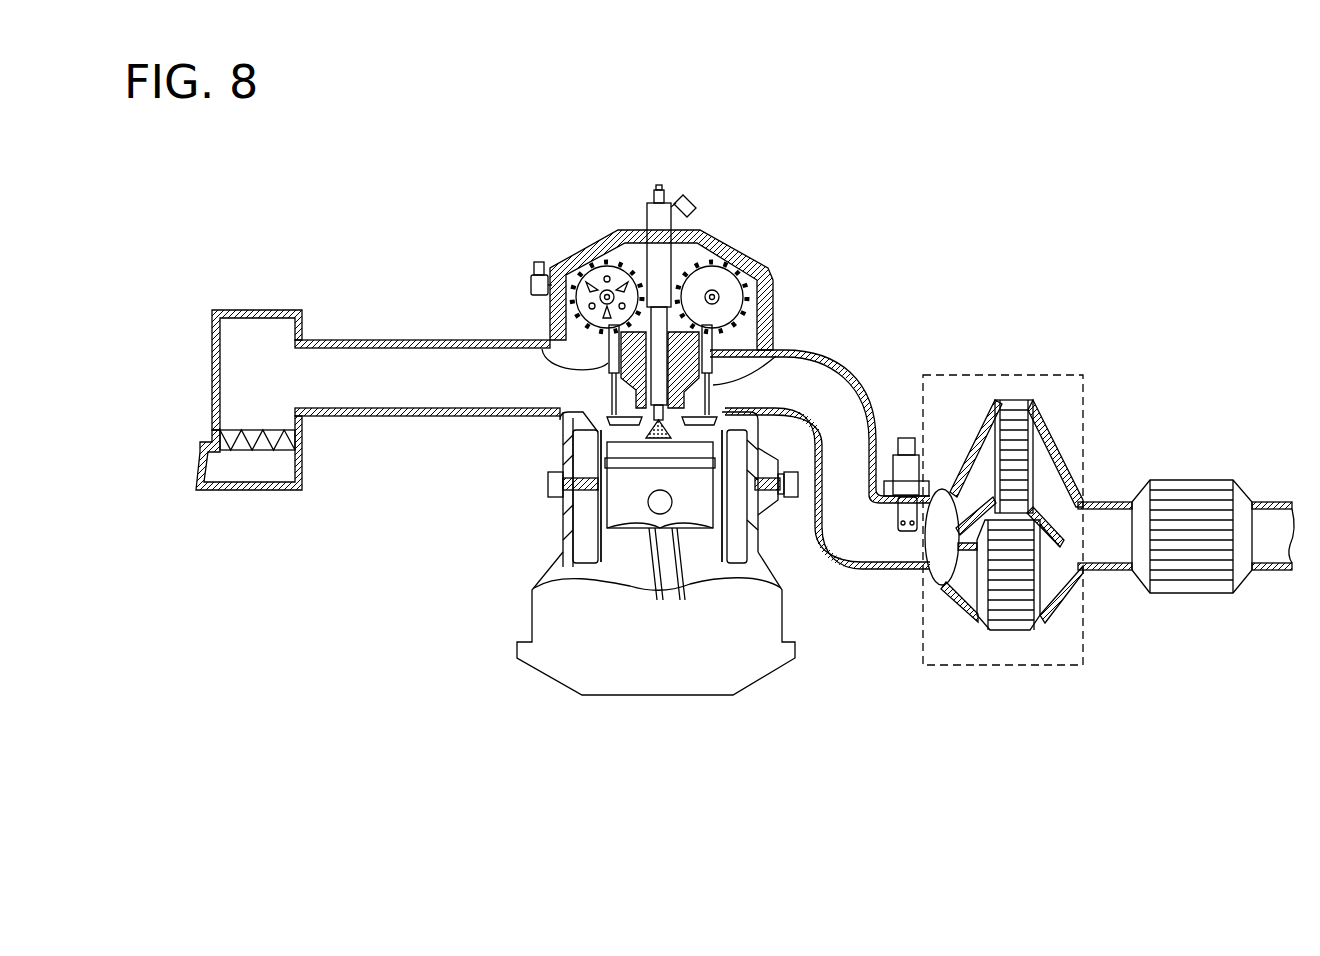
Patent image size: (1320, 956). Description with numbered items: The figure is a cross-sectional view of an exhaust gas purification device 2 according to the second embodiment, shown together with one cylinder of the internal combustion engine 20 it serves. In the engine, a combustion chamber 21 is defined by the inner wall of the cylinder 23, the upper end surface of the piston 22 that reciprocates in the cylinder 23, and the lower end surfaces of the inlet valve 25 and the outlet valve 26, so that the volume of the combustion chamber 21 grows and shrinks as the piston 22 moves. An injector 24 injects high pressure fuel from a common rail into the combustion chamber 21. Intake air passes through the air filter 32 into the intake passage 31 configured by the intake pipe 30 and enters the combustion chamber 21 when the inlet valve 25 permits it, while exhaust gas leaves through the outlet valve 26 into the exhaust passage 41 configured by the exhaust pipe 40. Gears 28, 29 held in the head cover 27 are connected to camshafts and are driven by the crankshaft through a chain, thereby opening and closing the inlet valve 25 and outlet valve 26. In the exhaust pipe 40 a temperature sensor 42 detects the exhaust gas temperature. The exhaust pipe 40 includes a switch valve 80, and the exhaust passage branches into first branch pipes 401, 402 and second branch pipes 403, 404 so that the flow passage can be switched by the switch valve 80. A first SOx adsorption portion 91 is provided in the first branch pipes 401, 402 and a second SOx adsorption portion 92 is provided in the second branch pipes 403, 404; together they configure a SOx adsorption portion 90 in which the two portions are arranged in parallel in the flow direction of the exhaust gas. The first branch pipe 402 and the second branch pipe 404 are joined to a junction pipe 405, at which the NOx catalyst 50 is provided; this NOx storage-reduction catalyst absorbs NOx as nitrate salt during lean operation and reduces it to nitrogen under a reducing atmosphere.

The exhaust gas purification device 2 is at (1190, 395).
The internal combustion engine 20 is at (757, 681).
The combustion chamber 21 is at (615, 433).
The piston 22 is at (610, 520).
The cylinder 23 is at (555, 563).
The injector 24 is at (647, 213).
The inlet valve 25 is at (540, 348).
The outlet valve 26 is at (782, 352).
The head cover 27 is at (664, 295).
The gear 28 is at (582, 262).
The gear 29 is at (740, 270).
The intake pipe 30 is at (347, 379).
The intake passage 31 is at (405, 383).
The air filter 32 is at (240, 432).
The exhaust pipe 40 is at (843, 362).
The exhaust passage 41 is at (862, 537).
The temperature sensor 42 is at (905, 437).
The NOx catalyst 50 is at (1215, 480).
The switch valve 80 is at (930, 600).
The SOx adsorption portion 90 is at (1042, 502).
The first SOx adsorption portion 91 is at (1020, 400).
The second SOx adsorption portion 92 is at (1020, 632).
The first branch pipe 401 is at (978, 440).
The first branch pipe 402 is at (1060, 460).
The second branch pipe 403 is at (965, 605).
The second branch pipe 404 is at (1067, 593).
The junction pipe 405 is at (1107, 573).